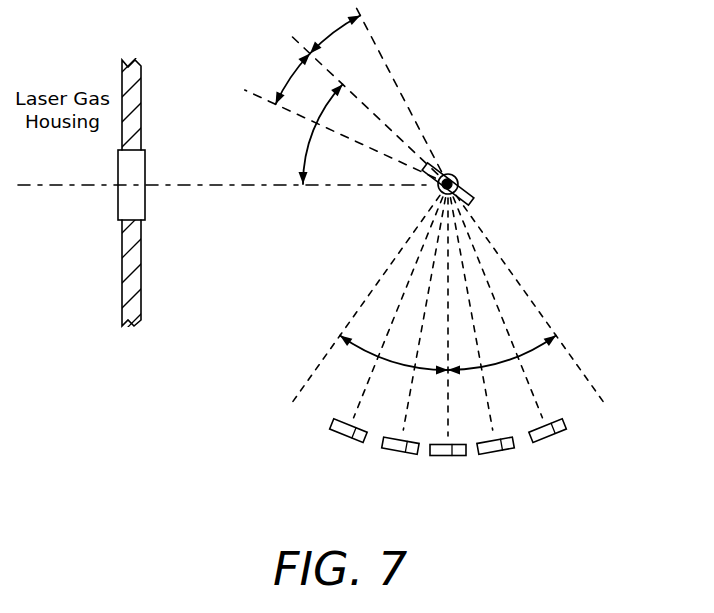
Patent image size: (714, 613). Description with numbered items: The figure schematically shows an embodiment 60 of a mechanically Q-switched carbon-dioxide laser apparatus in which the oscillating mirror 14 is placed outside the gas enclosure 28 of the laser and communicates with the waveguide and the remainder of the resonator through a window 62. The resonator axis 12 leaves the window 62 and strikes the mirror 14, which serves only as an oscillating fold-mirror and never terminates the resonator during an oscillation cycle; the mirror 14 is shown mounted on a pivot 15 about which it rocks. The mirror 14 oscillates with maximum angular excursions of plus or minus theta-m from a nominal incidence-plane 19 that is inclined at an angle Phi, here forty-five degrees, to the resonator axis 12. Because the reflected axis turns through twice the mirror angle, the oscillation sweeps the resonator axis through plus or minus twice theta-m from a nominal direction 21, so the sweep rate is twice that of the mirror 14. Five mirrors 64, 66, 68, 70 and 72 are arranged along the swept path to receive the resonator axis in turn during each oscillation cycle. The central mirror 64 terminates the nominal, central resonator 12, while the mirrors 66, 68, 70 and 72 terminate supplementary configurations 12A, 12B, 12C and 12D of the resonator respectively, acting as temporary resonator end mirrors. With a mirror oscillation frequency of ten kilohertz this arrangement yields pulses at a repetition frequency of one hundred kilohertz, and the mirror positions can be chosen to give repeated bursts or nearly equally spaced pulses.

The resonator axis 12 is at (267, 179).
The supplementary resonator configuration 12A is at (349, 408).
The supplementary resonator configuration 12B is at (398, 430).
The supplementary resonator configuration 12C is at (532, 420).
The supplementary resonator configuration 12D is at (586, 408).
The oscillating mirror 14 is at (462, 190).
The mirror pivot axis 15 is at (448, 173).
The nominal incidence-plane 19 is at (358, 101).
The nominal direction 21 is at (448, 292).
The gas enclosure 28 is at (148, 94).
The mechanically Q-switched CO2 laser apparatus 60 is at (172, 414).
The window 62 is at (145, 203).
The mirror 64 is at (461, 456).
The mirror 66 is at (355, 441).
The mirror 68 is at (407, 450).
The mirror 70 is at (508, 451).
The mirror 72 is at (562, 433).